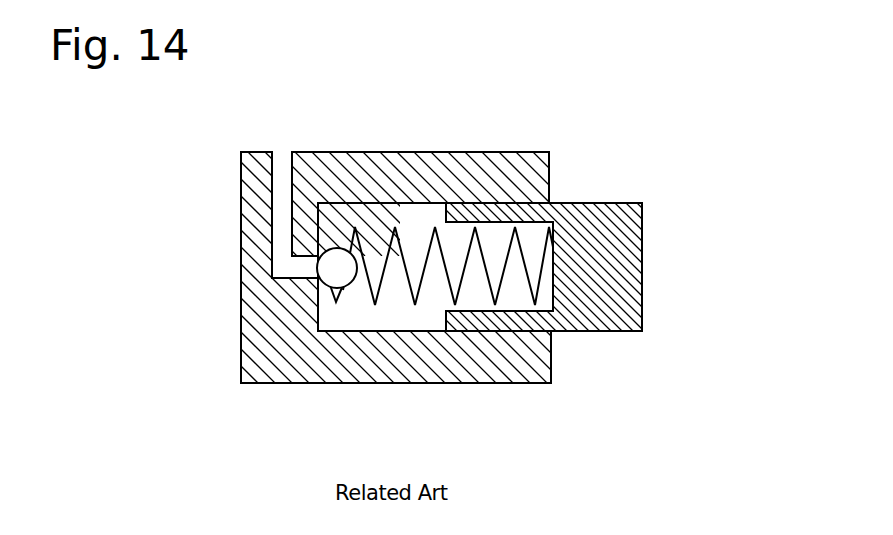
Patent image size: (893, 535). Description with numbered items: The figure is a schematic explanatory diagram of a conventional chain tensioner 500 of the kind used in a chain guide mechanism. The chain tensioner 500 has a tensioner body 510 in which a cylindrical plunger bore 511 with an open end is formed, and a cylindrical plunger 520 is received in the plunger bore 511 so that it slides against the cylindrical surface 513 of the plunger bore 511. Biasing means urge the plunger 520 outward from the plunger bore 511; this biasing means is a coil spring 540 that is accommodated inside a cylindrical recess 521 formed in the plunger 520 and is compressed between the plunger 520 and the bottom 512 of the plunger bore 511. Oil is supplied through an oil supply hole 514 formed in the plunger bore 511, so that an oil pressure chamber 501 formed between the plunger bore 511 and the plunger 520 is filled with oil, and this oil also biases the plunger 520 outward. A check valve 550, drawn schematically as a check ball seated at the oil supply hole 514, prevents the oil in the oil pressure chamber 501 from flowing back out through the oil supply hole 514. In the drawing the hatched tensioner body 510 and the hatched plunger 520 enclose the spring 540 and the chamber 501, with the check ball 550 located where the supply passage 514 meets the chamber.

The chain tensioner 500 is at (628, 93).
The tensioner body 510 is at (347, 362).
The plunger bore 511 is at (437, 100).
The bottom of the plunger bore 512 is at (338, 205).
The cylindrical surface of the plunger bore 513 is at (410, 203).
The oil supply hole 514 is at (282, 152).
The plunger 520 is at (627, 288).
The cylindrical recess 521 is at (488, 228).
The oil pressure chamber 501 is at (394, 291).
The coil spring 540 is at (502, 278).
The check valve 550 is at (318, 263).